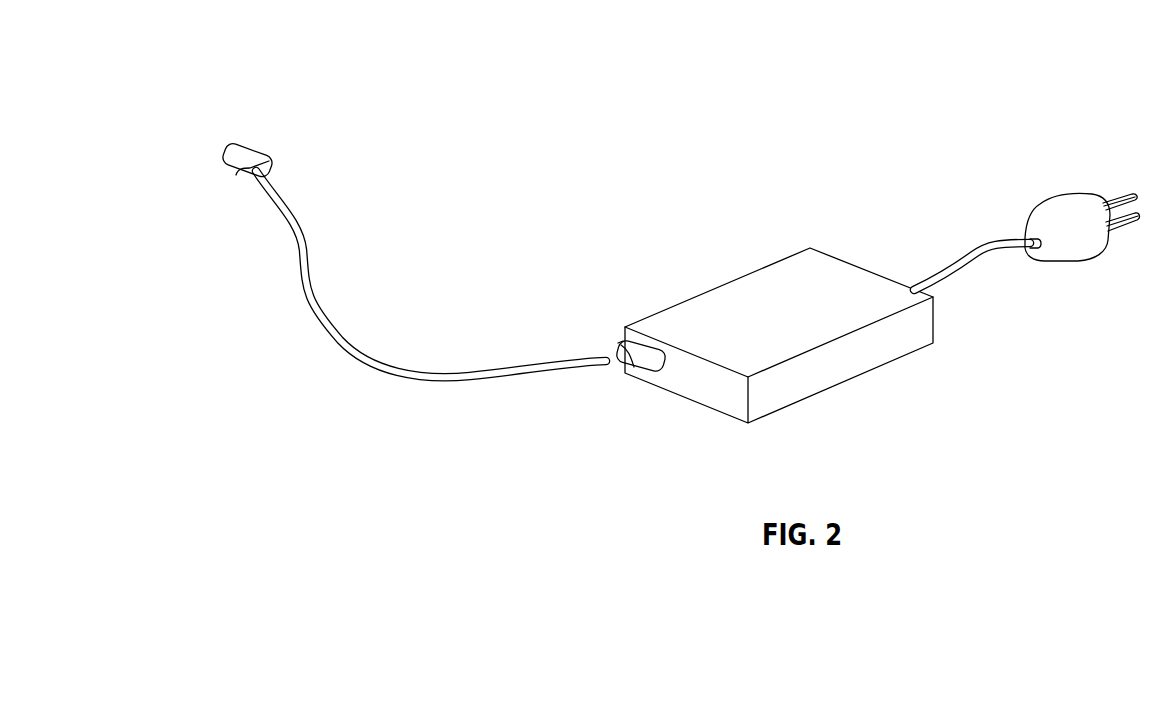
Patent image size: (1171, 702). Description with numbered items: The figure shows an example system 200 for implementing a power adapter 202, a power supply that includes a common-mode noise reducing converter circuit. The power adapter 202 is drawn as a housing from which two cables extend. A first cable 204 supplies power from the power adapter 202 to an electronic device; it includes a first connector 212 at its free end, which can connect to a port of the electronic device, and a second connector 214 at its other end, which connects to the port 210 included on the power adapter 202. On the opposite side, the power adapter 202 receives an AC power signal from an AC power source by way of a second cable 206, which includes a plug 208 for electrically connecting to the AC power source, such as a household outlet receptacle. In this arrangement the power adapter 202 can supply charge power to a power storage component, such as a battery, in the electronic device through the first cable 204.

The system 200 is at (457, 90).
The power adapter 202 is at (785, 323).
The first cable 204 is at (417, 380).
The second cable 206 is at (975, 270).
The plug 208 is at (1060, 213).
The port 210 is at (663, 372).
The first connector 212 is at (250, 143).
The second connector 214 is at (622, 343).